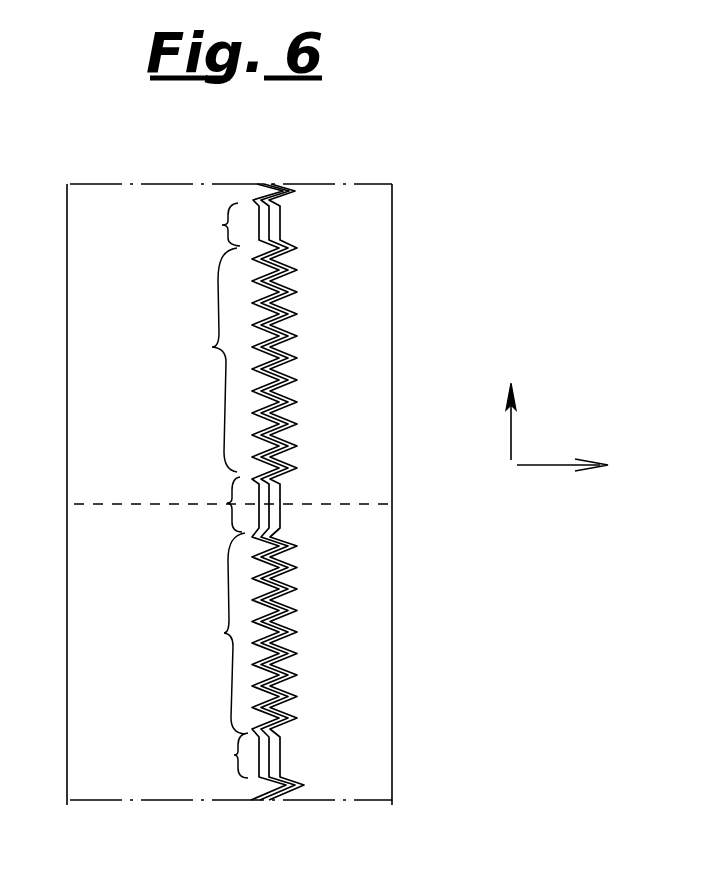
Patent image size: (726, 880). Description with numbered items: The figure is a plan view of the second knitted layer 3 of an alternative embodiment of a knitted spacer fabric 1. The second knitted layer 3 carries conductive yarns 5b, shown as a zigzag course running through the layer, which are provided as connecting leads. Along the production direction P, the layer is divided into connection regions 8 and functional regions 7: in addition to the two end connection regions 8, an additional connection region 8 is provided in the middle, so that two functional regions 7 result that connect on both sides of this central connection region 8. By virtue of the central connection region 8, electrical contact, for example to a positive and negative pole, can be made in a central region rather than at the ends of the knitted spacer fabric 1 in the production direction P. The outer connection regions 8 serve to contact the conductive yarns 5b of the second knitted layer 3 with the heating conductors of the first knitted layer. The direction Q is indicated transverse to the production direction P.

The knitted spacer fabric 1 is at (390, 676).
The second knitted layer 3 is at (372, 213).
The conductive yarns of the second knitted layer 5b is at (296, 384).
The functional region 7 is at (219, 491).
The connection region 8 is at (223, 490).
The production direction P is at (510, 432).
The direction Q is at (560, 467).